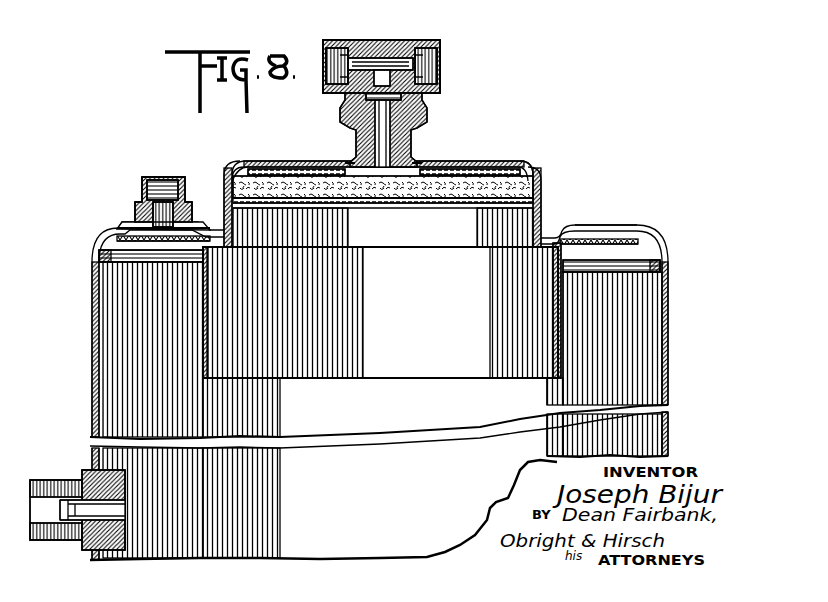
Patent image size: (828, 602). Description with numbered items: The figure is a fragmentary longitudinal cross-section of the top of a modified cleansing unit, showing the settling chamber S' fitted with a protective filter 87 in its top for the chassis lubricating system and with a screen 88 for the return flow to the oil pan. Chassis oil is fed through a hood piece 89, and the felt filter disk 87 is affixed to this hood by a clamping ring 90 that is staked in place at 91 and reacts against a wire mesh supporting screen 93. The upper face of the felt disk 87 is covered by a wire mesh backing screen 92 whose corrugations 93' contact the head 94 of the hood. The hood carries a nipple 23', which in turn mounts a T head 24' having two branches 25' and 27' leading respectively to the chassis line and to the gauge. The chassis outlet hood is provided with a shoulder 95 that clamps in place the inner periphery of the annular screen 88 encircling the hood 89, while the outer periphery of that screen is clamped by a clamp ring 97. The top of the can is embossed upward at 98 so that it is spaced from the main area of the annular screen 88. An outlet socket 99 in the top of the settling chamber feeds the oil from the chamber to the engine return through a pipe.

The T head 24' is at (381, 50).
The branch 25' is at (453, 66).
The branch 27' is at (314, 81).
The nipple 23' is at (409, 126).
The wire mesh backing screen 92 is at (420, 163).
The corrugations 93' is at (383, 167).
The protective filter 87 is at (485, 164).
The head 94 is at (312, 146).
The staking location 91 is at (247, 164).
The outlet socket 99 is at (145, 191).
The wire mesh supporting screen 93 is at (383, 217).
The clamping ring 90 is at (540, 210).
The screen 88 is at (600, 240).
The embossed top 98 is at (622, 225).
The clamp ring 97 is at (660, 272).
The hood piece 89 is at (563, 331).
The shoulder 95 is at (550, 250).
The settling chamber S' is at (404, 391).